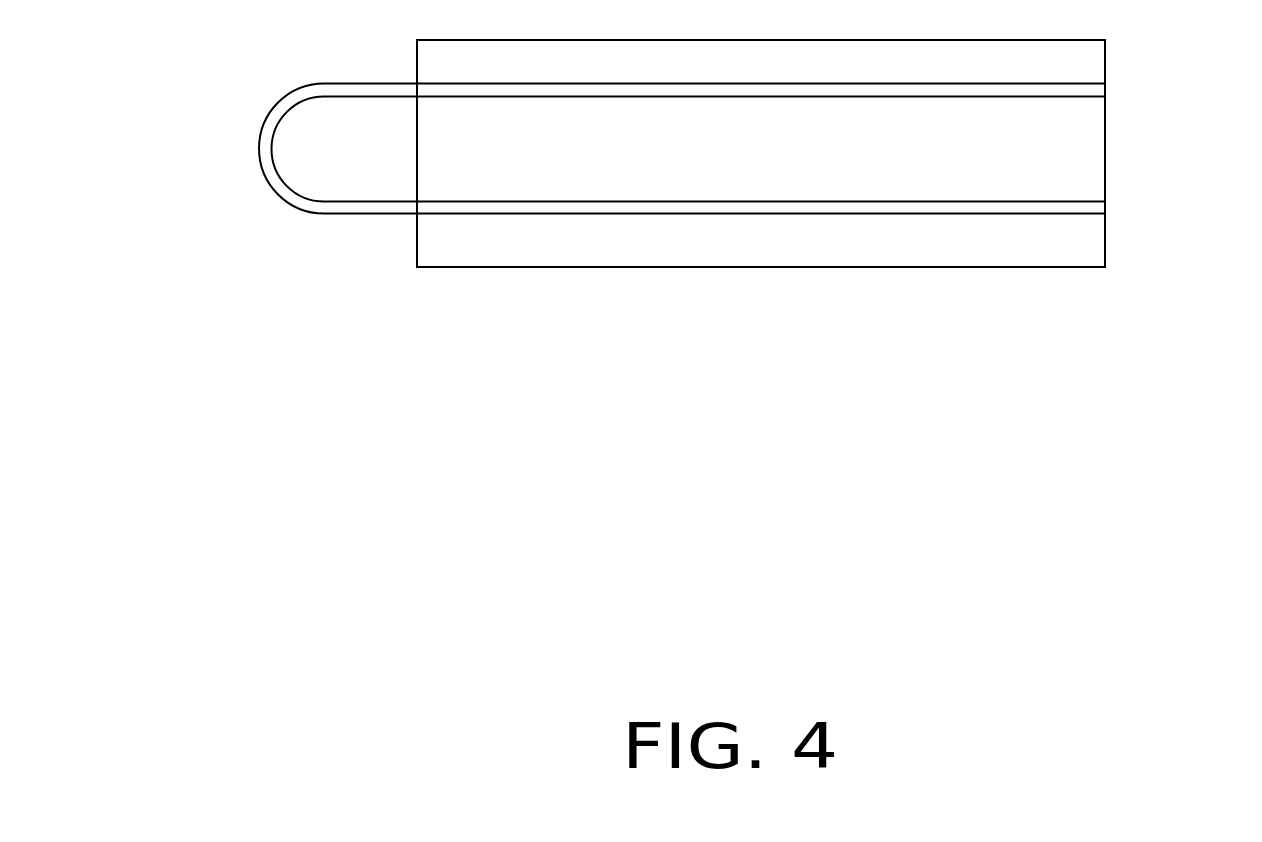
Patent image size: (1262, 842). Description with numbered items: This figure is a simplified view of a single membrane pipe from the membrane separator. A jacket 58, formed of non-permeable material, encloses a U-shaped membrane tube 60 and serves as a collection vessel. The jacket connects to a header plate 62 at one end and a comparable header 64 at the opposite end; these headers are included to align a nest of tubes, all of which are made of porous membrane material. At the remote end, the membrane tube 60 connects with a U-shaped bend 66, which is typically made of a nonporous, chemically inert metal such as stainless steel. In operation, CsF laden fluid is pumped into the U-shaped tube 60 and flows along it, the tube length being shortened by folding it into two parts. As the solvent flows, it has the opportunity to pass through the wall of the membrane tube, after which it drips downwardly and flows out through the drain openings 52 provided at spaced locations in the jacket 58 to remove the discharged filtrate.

The drain openings 52 is at (761, 210).
The jacket 58 is at (791, 346).
The U-shaped membrane tube 60 is at (752, 207).
The header plate 62 is at (1178, 153).
The header 64 is at (334, 189).
The U-shaped bend 66 is at (611, 187).